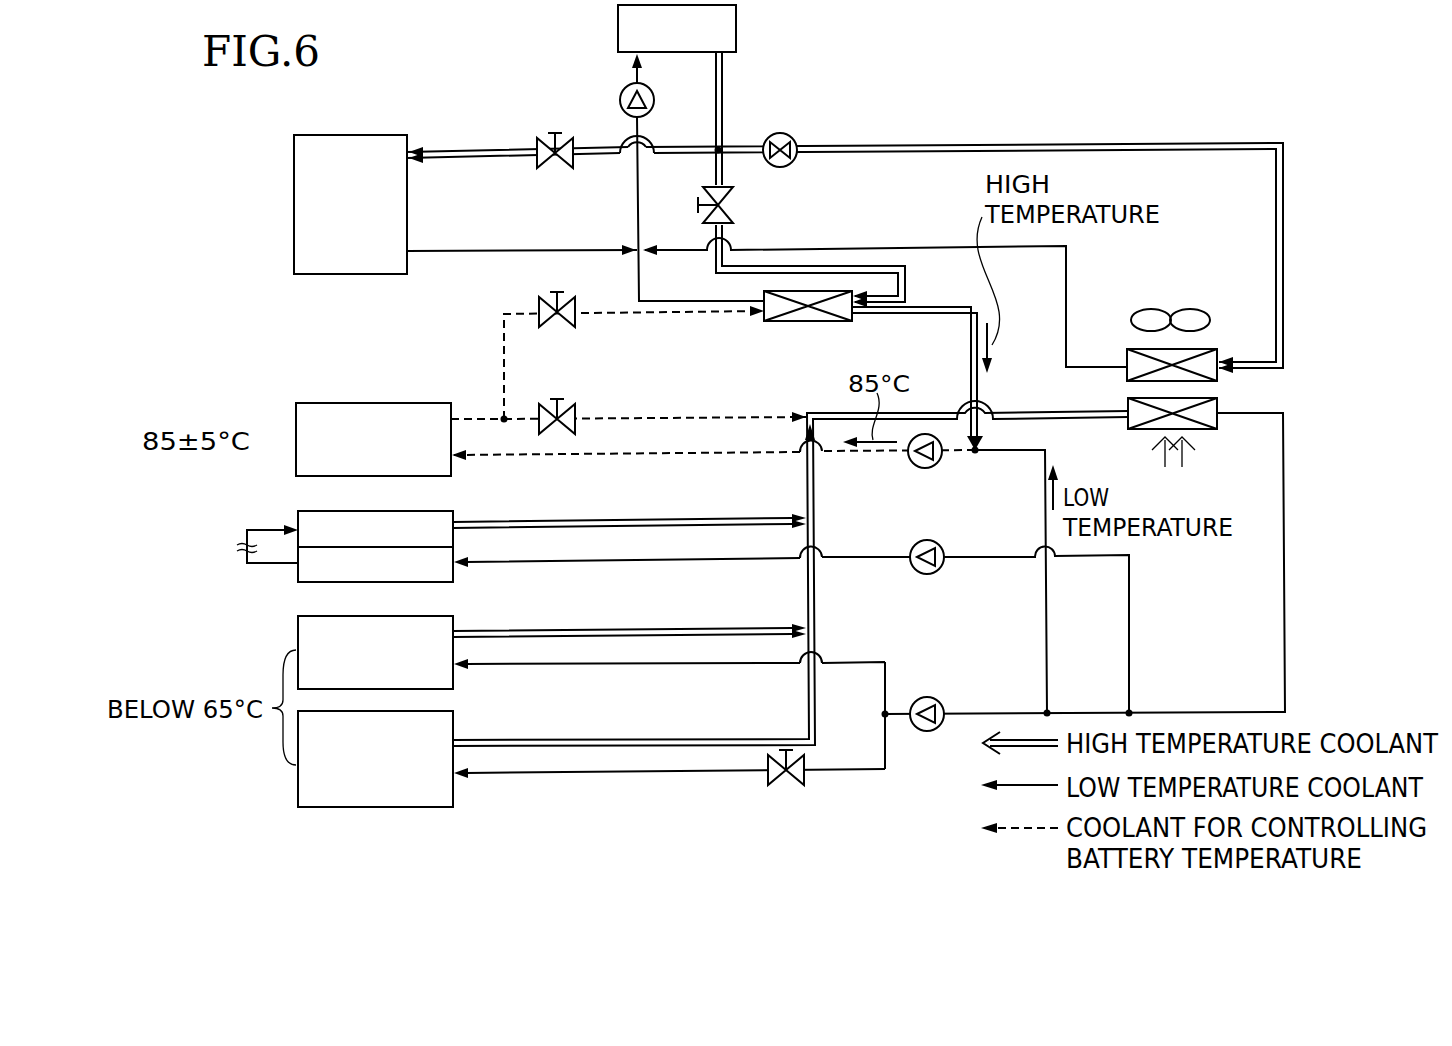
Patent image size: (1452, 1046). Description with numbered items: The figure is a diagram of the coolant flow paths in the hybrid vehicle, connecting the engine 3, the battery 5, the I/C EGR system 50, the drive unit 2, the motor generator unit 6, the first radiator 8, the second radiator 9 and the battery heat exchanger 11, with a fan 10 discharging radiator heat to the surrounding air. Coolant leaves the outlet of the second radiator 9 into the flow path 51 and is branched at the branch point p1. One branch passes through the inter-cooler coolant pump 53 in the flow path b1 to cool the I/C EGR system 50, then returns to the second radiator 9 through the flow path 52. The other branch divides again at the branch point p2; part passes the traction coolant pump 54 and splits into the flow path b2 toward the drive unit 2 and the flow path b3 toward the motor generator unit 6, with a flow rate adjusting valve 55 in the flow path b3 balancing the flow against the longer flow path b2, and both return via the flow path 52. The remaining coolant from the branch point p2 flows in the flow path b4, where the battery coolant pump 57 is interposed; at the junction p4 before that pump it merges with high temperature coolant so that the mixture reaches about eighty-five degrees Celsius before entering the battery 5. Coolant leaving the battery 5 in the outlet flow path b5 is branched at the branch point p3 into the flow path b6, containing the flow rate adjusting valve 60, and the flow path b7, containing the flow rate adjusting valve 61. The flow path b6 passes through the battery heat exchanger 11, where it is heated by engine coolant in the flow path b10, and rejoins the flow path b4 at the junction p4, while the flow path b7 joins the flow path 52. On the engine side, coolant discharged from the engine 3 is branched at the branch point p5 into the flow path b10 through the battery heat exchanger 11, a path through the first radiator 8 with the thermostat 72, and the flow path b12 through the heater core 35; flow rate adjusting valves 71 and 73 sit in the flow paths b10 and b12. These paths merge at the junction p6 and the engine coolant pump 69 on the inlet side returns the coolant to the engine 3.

The drive unit 2 is at (297, 633).
The engine 3 is at (737, 25).
The battery 5 is at (296, 417).
The motor generator unit 6 is at (298, 782).
The first radiator 8 is at (1218, 378).
The second radiator 9 is at (1202, 432).
The fan 10 is at (1188, 310).
The battery heat exchanger 11 is at (807, 320).
The heater core 35 is at (294, 181).
The I/C EGR system 50 is at (306, 510).
The flow path 51 is at (1284, 607).
The flow path 52 is at (1077, 410).
The inter-cooler coolant pump 53 is at (937, 542).
The traction coolant pump 54 is at (937, 700).
The flow rate adjusting valve 55 is at (773, 783).
The battery coolant pump 57 is at (920, 470).
The flow rate adjusting valve 60 is at (548, 295).
The flow rate adjusting valve 61 is at (560, 398).
The engine coolant pump 69 is at (625, 85).
The flow rate adjusting valve 71 is at (732, 200).
The thermostat 72 is at (790, 133).
The flow rate adjusting valve 73 is at (548, 135).
The flow path b1 is at (1040, 145).
The flow path b2 is at (852, 662).
The flow path b3 is at (848, 772).
The flow path b4 is at (1047, 617).
The outlet flow path b5 is at (463, 418).
The flow path b6 is at (500, 338).
The flow path b7 is at (690, 400).
The flow path b10 is at (855, 265).
The flow path b12 is at (473, 150).
The branch point p1 is at (1132, 712).
The branch point p2 is at (1047, 711).
The branch point p3 is at (503, 417).
The junction p4 is at (978, 449).
The branch point p5 is at (716, 147).
The junction p6 is at (636, 248).